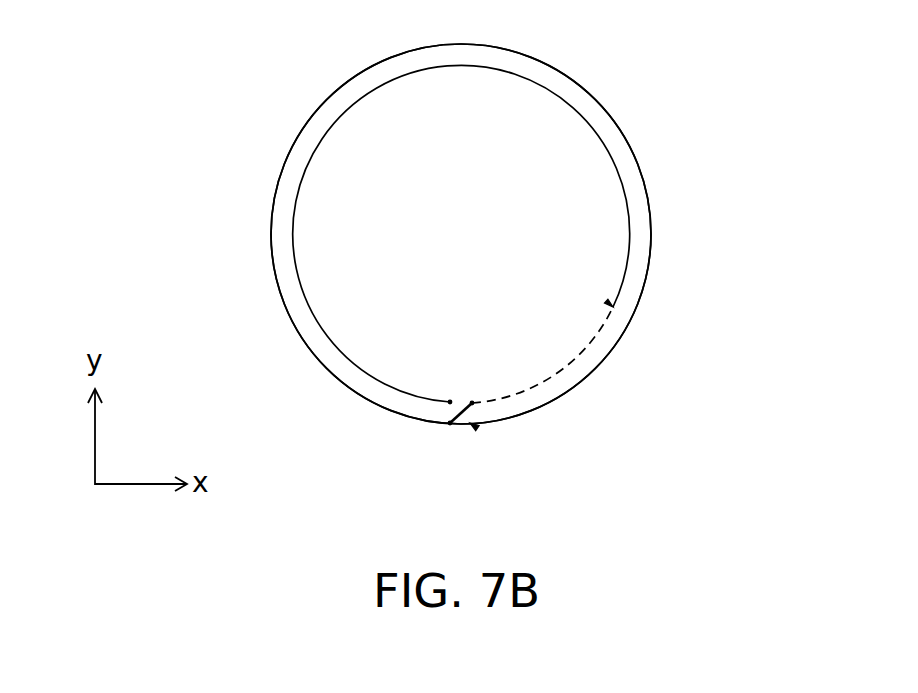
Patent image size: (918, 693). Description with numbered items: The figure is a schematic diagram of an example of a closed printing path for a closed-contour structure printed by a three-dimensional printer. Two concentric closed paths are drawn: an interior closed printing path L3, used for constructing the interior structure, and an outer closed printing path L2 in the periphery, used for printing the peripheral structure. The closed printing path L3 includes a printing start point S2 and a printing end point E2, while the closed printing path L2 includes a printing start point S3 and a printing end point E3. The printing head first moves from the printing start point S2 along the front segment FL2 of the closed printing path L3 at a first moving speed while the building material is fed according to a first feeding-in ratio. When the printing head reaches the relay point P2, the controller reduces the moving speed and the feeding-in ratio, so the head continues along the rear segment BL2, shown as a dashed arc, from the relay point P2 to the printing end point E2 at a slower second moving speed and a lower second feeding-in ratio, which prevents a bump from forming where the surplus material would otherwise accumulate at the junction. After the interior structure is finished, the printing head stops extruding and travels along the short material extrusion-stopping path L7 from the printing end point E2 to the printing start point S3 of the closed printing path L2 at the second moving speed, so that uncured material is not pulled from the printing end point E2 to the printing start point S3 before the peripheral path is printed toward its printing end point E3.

The front segment FL2 is at (647, 189).
The closed printing path L2 is at (652, 248).
The closed printing path L3 is at (623, 277).
The rear segment BL2 is at (568, 360).
The relay point P2 is at (613, 307).
The material extrusion-stopping path L7 is at (461, 418).
The printing start point S2 is at (450, 402).
The printing end point E2 is at (472, 403).
The printing start point S3 is at (450, 423).
The printing end point E3 is at (470, 423).